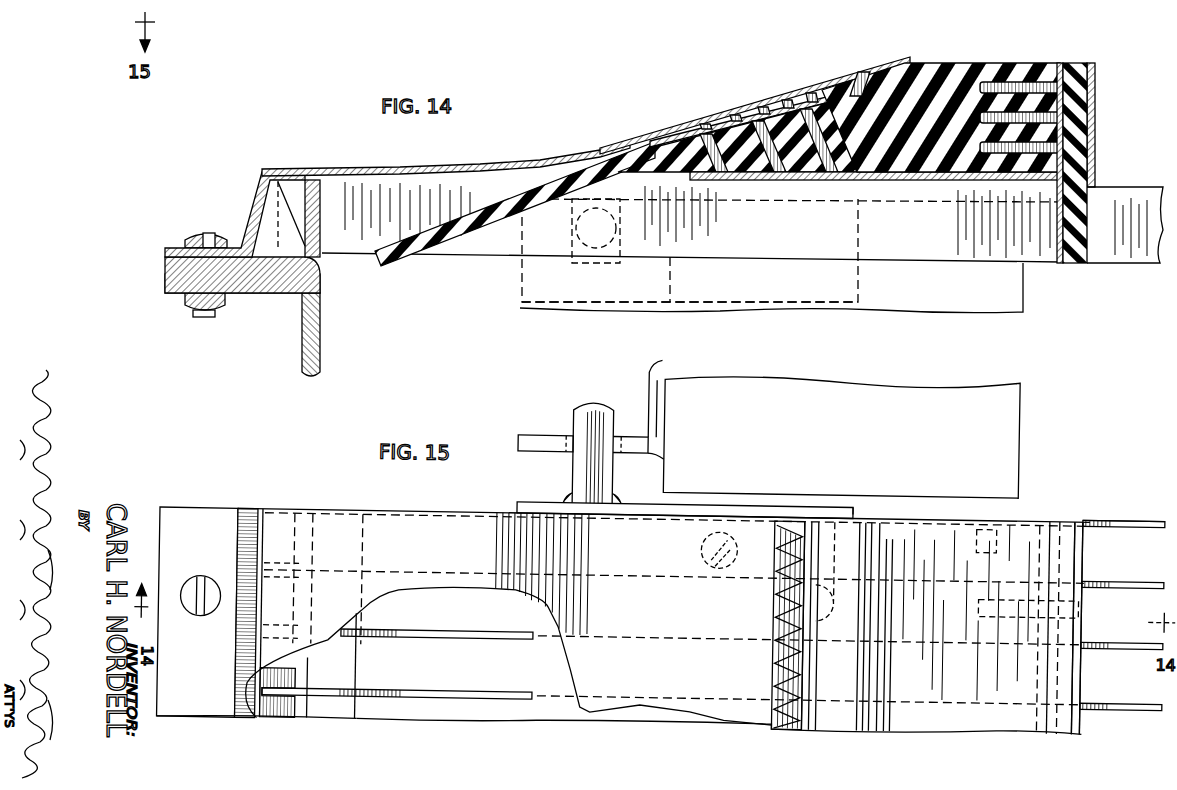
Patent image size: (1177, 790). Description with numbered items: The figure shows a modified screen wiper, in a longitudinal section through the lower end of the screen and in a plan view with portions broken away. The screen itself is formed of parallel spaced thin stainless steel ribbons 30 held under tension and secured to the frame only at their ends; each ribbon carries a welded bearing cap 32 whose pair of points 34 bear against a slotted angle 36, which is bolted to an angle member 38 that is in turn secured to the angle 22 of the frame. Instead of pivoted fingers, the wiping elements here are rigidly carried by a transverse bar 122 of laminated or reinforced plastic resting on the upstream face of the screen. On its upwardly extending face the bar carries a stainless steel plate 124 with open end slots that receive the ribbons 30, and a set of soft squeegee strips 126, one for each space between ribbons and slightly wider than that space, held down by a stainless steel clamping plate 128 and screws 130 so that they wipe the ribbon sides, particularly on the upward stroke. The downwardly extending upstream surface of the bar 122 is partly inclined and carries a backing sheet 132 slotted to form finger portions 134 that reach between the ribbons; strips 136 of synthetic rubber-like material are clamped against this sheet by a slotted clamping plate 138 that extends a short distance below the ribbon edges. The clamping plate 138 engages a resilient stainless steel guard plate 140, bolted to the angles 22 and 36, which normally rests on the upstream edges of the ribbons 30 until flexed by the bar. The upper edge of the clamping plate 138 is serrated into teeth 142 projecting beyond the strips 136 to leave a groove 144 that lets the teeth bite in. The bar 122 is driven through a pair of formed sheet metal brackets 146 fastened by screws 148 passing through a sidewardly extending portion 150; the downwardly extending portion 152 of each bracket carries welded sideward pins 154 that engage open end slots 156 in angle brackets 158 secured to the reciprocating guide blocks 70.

In FIG. 14, the angle 22 is at (258, 284).
In FIG. 14, the ribbons 30 is at (1120, 255).
In FIG. 15, the ribbons 30 is at (423, 694).
In FIG. 14, the bearing cap 32 is at (282, 200).
In FIG. 15, the bearing cap 32 is at (272, 716).
In FIG. 14, the points 34 is at (322, 210).
In FIG. 14, the slotted angle 36 is at (325, 262).
In FIG. 14, the angle member 38 is at (323, 320).
In FIG. 14, the guide blocks 70 is at (903, 309).
In FIG. 15, the guide blocks 70 is at (1003, 394).
In FIG. 14, the transverse bar 122 is at (943, 63).
In FIG. 15, the transverse bar 122 is at (1030, 511).
In FIG. 14, the stainless steel plate 124 is at (1052, 262).
In FIG. 14, the squeegee strips 126 is at (1075, 265).
In FIG. 15, the squeegee strips 126 is at (1069, 505).
In FIG. 14, the clamping plate 128 is at (1097, 118).
In FIG. 15, the clamping plate 128 is at (1095, 507).
In FIG. 14, the screws 130 is at (1095, 82).
In FIG. 14, the backing sheet 132 is at (860, 80).
In FIG. 15, the backing sheet 132 is at (874, 695).
In FIG. 14, the finger portions 134 is at (460, 233).
In FIG. 14, the strips 136 is at (617, 148).
In FIG. 14, the clamping plate 138 is at (700, 112).
In FIG. 15, the clamping plate 138 is at (703, 714).
In FIG. 14, the guard plate 140 is at (545, 160).
In FIG. 15, the guard plate 140 is at (448, 578).
In FIG. 14, the teeth 142 is at (810, 82).
In FIG. 15, the teeth 142 is at (806, 720).
In FIG. 14, the groove 144 is at (805, 92).
In FIG. 14, the sheet metal brackets 146 is at (780, 300).
In FIG. 15, the sheet metal brackets 146 is at (837, 496).
In FIG. 15, the screws 148 is at (805, 622).
In FIG. 14, the sidewardly extending portion 150 is at (810, 182).
In FIG. 14, the downwardly extending portion 152 is at (570, 302).
In FIG. 15, the downwardly extending portion 152 is at (533, 497).
In FIG. 15, the pins 154 is at (598, 410).
In FIG. 14, the open end slots 156 is at (608, 262).
In FIG. 15, the open end slots 156 is at (612, 420).
In FIG. 15, the angle brackets 158 is at (647, 370).